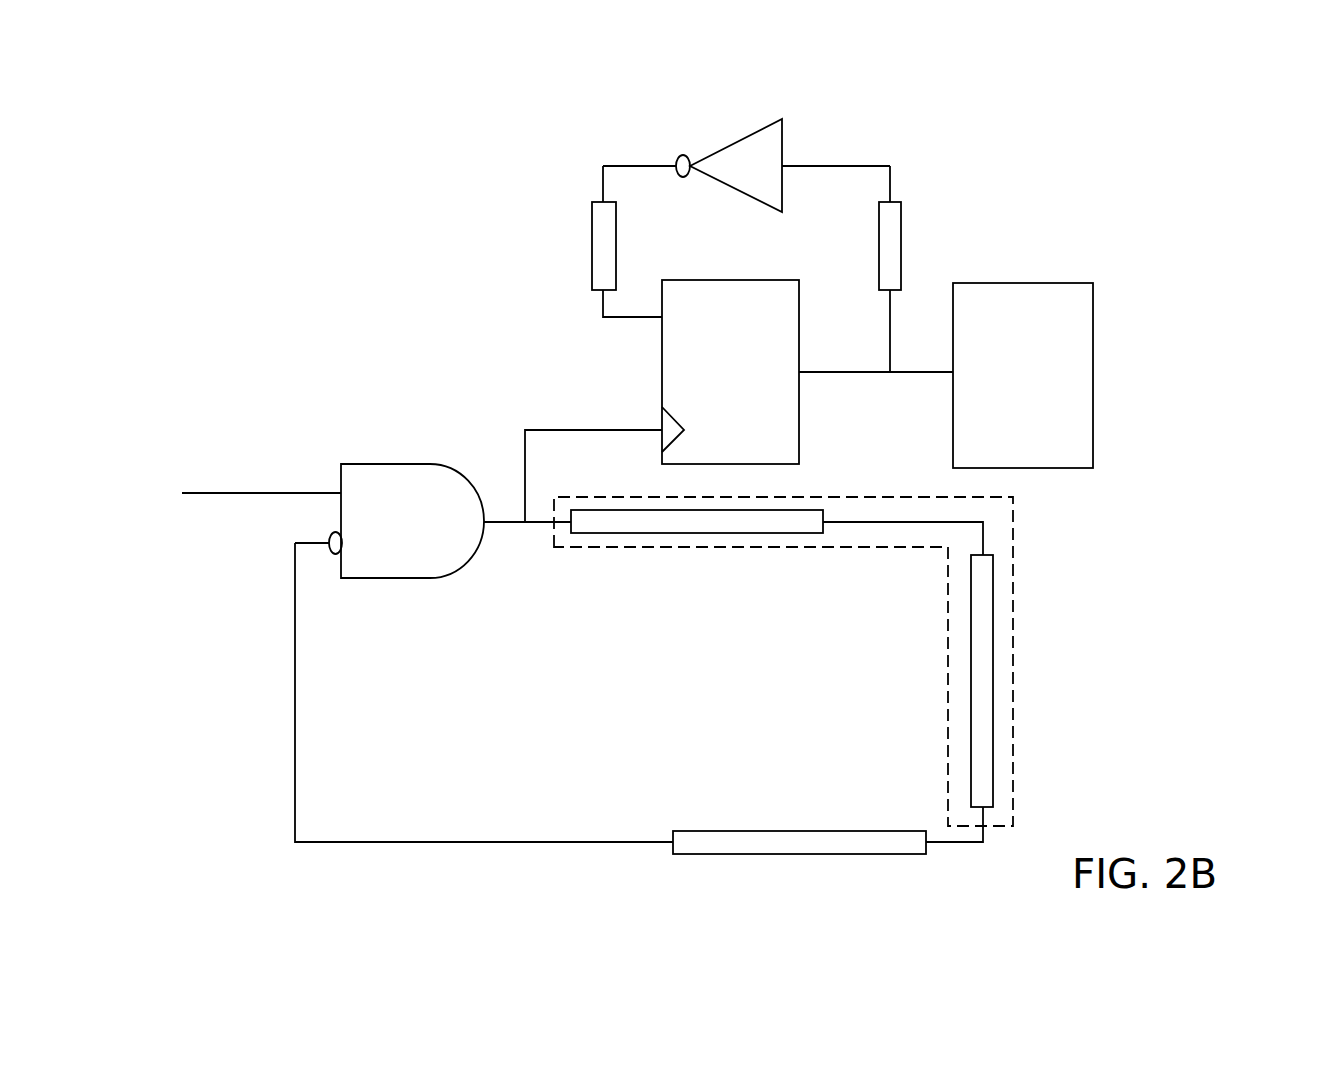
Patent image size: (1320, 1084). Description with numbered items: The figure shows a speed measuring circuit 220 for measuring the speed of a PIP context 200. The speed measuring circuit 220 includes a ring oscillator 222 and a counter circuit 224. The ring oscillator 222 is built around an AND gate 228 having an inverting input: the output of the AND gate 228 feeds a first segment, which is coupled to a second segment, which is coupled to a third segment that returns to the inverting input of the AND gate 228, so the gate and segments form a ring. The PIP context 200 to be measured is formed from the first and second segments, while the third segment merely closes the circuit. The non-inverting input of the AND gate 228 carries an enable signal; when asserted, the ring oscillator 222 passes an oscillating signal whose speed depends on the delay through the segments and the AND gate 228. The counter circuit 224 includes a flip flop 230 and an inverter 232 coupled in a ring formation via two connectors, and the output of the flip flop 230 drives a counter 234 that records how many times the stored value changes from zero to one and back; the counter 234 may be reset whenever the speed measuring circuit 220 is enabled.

The PIP context 200 is at (1013, 522).
The speed measuring circuit 220 is at (264, 232).
The ring oscillator 222 is at (272, 437).
The counter circuit 224 is at (559, 174).
The AND gate 228 is at (422, 464).
The flip flop 230 is at (712, 397).
The inverter 232 is at (730, 148).
The counter 234 is at (1082, 388).